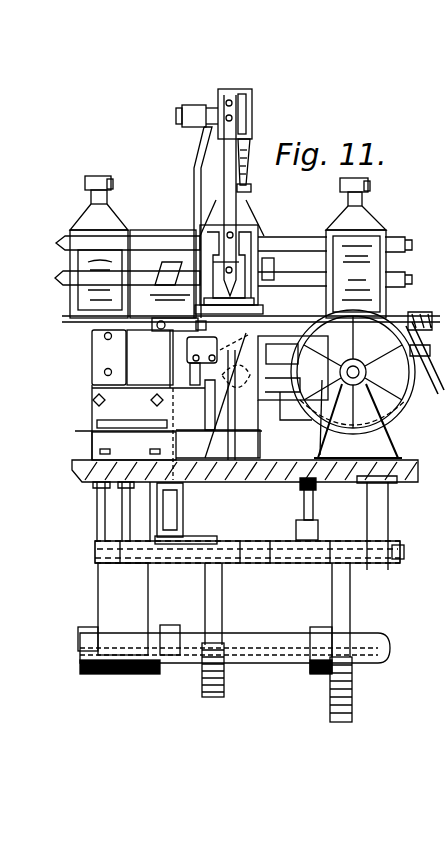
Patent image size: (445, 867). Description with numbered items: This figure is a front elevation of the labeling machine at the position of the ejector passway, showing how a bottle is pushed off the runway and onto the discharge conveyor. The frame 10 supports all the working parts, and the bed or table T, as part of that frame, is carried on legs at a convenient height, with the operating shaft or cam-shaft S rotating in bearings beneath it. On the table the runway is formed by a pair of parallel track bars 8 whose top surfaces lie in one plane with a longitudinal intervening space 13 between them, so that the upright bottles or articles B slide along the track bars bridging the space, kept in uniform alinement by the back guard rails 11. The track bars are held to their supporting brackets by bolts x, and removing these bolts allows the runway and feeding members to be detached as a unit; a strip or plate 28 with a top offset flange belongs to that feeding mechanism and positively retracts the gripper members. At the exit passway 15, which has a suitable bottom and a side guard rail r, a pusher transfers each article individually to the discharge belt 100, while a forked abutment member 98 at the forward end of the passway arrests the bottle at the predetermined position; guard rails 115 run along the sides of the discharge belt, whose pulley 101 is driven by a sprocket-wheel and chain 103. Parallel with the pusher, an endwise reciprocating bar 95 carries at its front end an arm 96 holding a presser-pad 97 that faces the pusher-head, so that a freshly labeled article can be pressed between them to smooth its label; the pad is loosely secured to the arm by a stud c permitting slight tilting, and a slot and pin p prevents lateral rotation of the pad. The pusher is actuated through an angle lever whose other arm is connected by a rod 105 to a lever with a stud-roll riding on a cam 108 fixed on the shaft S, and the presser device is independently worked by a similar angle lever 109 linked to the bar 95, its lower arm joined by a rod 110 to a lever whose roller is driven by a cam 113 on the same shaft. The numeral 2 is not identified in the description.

The endwise reciprocating bar 95 is at (240, 108).
The arm 96 is at (238, 165).
The angle lever 109 is at (194, 182).
The forked abutment member 98 is at (228, 270).
The presser-pad 97 is at (252, 228).
The exit passway 15 is at (262, 262).
The slot and pin p is at (248, 222).
The side guard rail r is at (274, 270).
The guard rails 115 is at (63, 277).
The stud c is at (196, 262).
The intervening space 13 is at (398, 280).
The back guard rails 11 is at (390, 250).
The bottles or articles B is at (350, 214).
The discharge belt 100 is at (88, 316).
The rod 110 is at (166, 349).
The bolts x is at (128, 401).
The strip or plate 28 is at (304, 352).
The pulley 101 is at (364, 372).
The chain 103 is at (425, 365).
The track bars 8 is at (420, 322).
The frame 2 is at (426, 352).
The bed or table T is at (201, 513).
The rod 105 is at (313, 492).
The frame 10 is at (113, 609).
The cam 113 is at (216, 622).
The cam 108 is at (340, 622).
The operating shaft S is at (272, 648).